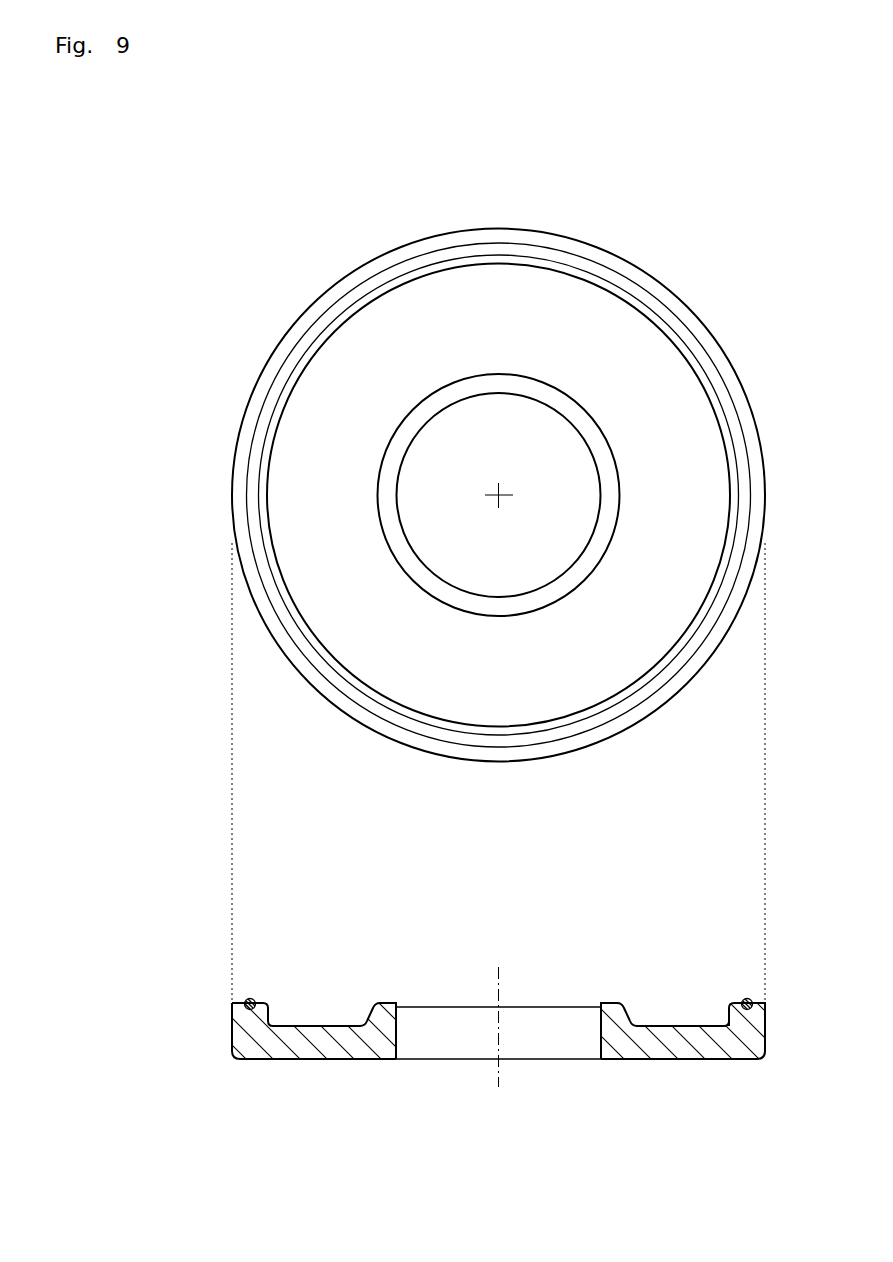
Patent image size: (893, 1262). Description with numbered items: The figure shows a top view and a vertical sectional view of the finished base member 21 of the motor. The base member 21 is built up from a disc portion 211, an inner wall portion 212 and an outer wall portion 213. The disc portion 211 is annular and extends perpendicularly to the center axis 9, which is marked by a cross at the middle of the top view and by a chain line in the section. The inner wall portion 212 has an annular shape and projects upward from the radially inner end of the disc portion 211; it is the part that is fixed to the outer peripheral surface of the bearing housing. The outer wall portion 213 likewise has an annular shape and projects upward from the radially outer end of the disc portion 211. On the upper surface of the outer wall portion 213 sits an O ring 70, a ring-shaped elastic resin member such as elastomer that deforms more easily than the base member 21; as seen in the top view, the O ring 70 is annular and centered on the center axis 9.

The base member 21 is at (557, 184).
The O ring 70 is at (346, 306).
The center axis 9 is at (493, 492).
The disc portion 211 is at (392, 640).
The inner wall portion 212 is at (525, 602).
The outer wall portion 213 is at (647, 705).